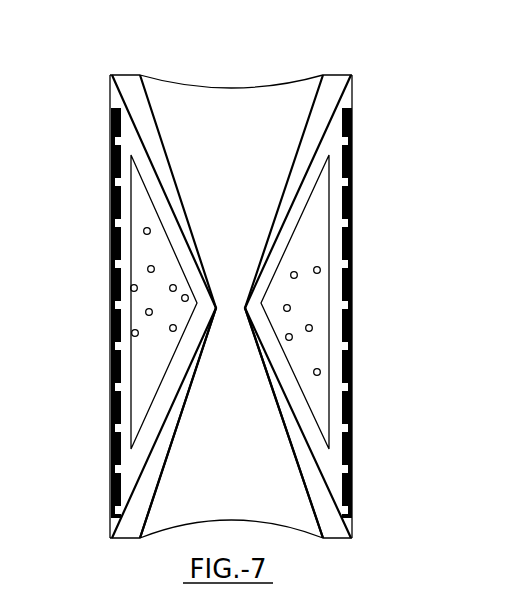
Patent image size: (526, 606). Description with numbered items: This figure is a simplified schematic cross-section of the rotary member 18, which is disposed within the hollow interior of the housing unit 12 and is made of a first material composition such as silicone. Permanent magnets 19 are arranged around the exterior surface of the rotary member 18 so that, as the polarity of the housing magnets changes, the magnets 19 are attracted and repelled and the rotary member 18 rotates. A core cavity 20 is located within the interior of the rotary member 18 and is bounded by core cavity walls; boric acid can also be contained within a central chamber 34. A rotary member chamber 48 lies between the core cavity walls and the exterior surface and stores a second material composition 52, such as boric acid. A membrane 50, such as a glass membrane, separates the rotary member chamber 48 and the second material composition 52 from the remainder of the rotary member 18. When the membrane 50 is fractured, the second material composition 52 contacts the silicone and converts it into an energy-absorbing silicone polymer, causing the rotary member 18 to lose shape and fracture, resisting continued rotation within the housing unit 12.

The housing unit 12 is at (519, 584).
The rotary member 18 is at (80, 80).
The magnets 19 is at (353, 242).
The core cavity 20 is at (353, 328).
The central chamber 34 is at (110, 328).
The rotary member chamber 48 is at (148, 372).
The membrane 50 is at (329, 387).
The second material composition 52 is at (147, 270).